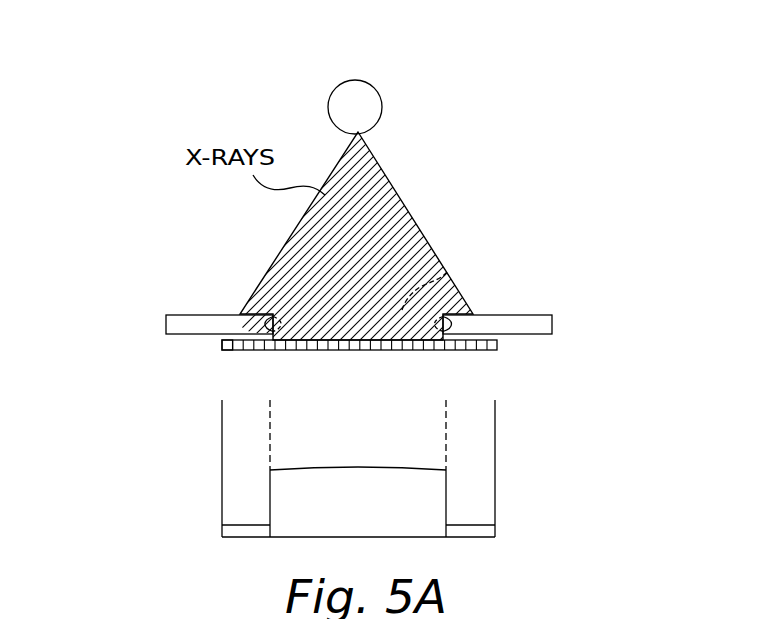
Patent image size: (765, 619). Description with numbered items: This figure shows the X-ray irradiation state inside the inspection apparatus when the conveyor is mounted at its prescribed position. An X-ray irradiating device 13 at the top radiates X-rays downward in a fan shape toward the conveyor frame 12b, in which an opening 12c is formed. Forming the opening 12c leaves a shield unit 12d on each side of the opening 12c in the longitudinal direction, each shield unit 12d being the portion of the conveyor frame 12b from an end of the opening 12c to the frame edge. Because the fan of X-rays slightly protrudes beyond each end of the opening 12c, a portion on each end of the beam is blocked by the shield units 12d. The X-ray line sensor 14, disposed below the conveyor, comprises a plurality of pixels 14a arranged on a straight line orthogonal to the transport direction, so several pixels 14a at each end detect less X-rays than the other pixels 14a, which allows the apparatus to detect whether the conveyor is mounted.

The X-ray irradiating device 13 is at (358, 95).
The conveyor frame 12b is at (173, 325).
The opening 12c is at (447, 272).
The shield unit 12d is at (250, 312).
The X-ray line sensor 14 is at (508, 347).
The pixels 14a is at (223, 348).